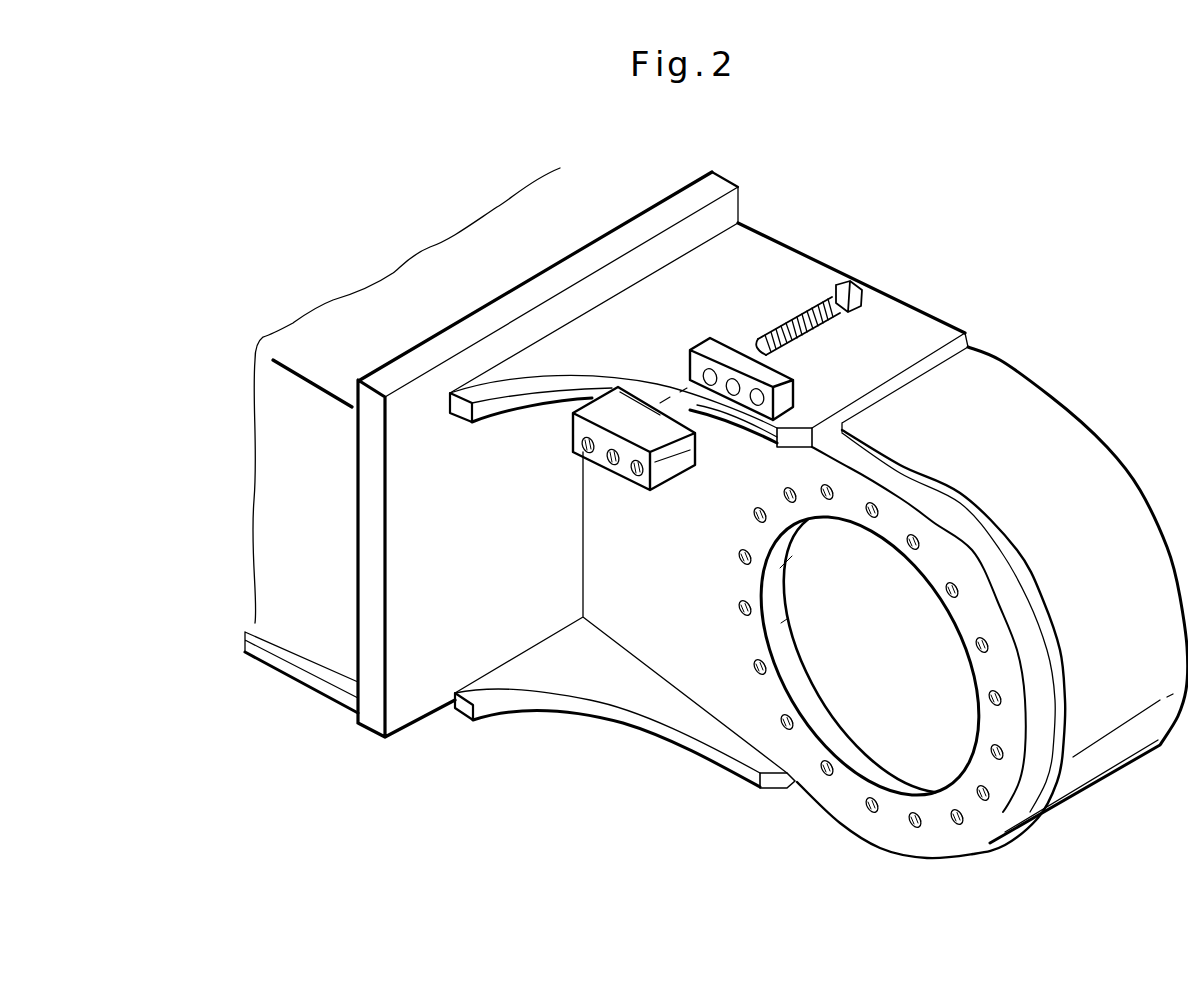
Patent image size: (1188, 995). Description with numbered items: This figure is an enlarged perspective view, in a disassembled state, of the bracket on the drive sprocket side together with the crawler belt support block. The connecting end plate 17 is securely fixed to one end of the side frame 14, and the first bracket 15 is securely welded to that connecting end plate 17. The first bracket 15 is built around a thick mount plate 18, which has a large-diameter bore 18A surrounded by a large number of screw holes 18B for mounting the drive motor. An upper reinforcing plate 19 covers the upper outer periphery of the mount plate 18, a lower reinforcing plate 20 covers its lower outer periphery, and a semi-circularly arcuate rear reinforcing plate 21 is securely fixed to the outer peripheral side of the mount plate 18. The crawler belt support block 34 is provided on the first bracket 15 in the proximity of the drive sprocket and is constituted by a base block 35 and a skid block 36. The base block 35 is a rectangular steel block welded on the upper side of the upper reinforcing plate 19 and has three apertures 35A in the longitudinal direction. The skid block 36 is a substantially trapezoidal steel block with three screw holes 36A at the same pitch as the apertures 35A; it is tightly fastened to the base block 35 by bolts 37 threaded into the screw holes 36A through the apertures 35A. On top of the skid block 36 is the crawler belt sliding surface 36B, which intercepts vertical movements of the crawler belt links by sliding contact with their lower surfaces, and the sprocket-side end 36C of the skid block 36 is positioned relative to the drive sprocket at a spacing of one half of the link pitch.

The side frame 14 is at (272, 532).
The first bracket 15 is at (952, 601).
The connecting end plate 17 is at (693, 198).
The mount plate 18 is at (710, 683).
The large-diameter bore 18A is at (866, 770).
The screw holes 18B is at (781, 724).
The upper reinforcing plate 19 is at (747, 260).
The lower reinforcing plate 20 is at (490, 687).
The rear reinforcing plate 21 is at (1080, 483).
The crawler belt support block 34 is at (686, 334).
The base block 35 is at (838, 333).
The apertures 35A is at (760, 390).
The skid block 36 is at (510, 482).
The screw holes 36A is at (640, 487).
The crawler belt sliding surface 36B is at (625, 427).
The end of the skid block 36C is at (667, 470).
The bolts 37 is at (850, 278).